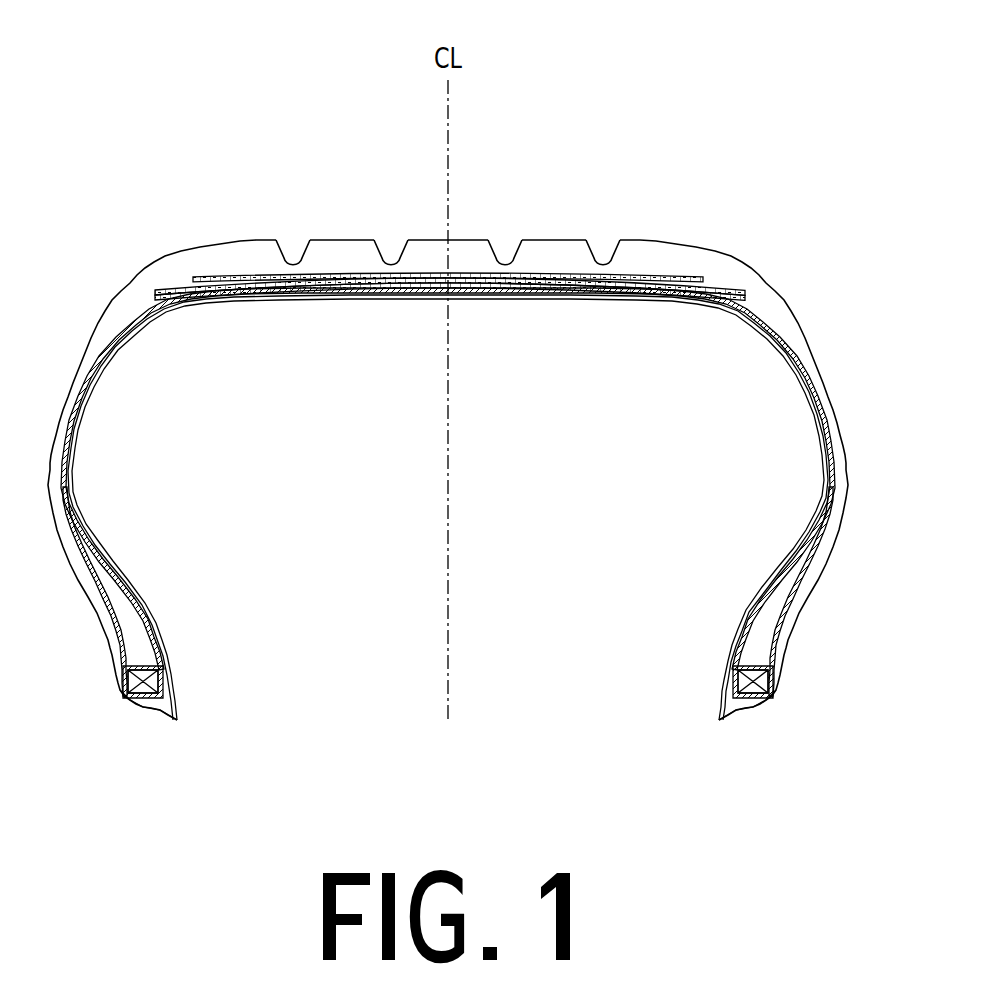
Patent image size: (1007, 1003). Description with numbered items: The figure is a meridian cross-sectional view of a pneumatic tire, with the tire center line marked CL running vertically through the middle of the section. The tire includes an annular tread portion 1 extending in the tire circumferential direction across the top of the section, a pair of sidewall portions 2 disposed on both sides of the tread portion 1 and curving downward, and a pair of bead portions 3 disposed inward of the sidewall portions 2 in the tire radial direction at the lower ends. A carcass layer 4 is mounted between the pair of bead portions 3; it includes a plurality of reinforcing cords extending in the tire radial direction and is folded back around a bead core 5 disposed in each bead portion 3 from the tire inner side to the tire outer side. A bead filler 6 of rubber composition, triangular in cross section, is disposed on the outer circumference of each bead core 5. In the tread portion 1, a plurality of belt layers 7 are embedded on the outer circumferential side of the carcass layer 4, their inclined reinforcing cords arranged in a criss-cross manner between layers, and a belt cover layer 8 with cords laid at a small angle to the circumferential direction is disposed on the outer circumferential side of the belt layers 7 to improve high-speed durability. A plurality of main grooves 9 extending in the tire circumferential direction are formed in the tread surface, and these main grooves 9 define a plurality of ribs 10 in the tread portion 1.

The tread portion 1 is at (467, 221).
The sidewall portion 2 is at (847, 407).
The bead portion 3 is at (792, 682).
The carcass layer 4 is at (788, 358).
The bead core 5 is at (733, 680).
The bead filler 6 is at (763, 645).
The belt layer 7 is at (613, 296).
The belt cover layer 8 is at (684, 275).
The main groove 9 is at (593, 258).
The rib 10 is at (643, 254).